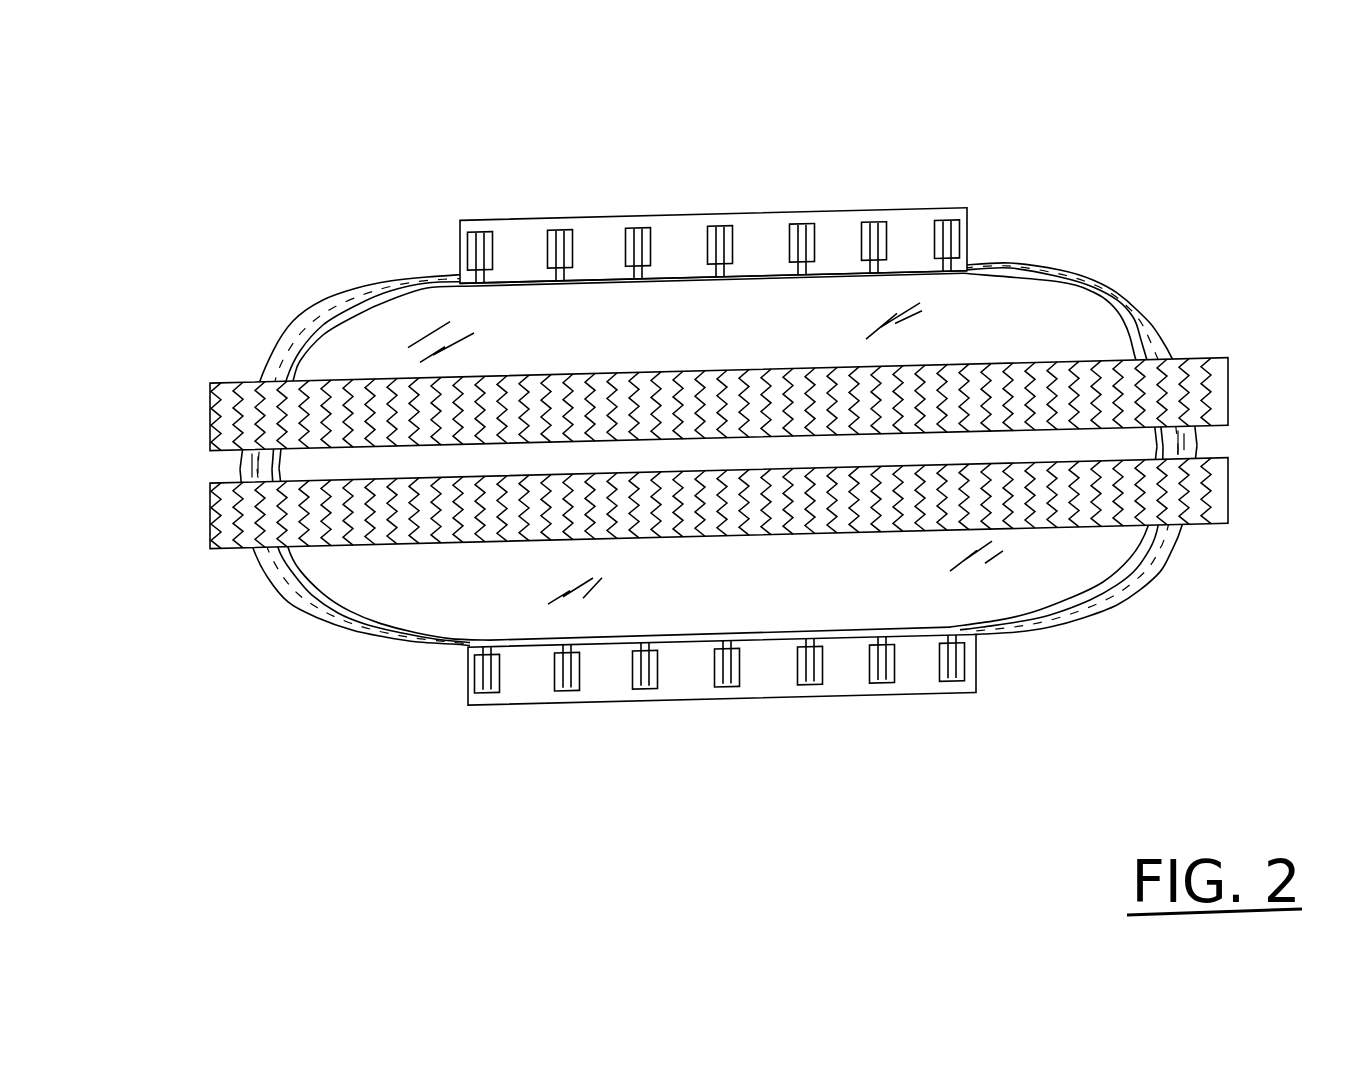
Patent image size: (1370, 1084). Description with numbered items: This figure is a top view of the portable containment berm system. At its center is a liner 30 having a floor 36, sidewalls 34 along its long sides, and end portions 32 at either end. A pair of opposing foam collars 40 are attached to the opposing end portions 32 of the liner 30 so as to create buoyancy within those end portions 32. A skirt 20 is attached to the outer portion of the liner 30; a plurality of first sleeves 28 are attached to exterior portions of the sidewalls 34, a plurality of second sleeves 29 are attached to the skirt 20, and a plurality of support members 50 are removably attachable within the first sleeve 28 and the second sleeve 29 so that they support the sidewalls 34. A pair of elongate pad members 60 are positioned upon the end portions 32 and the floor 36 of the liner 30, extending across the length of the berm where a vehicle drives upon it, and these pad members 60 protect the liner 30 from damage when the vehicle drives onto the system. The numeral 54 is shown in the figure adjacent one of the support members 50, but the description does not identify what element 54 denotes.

The skirt 20 is at (903, 232).
The first sleeve 28 is at (802, 640).
The second sleeve 29 is at (716, 678).
The liner 30 is at (362, 641).
The end portion 32 is at (288, 582).
The sidewall 34 is at (828, 275).
The floor 36 is at (1060, 323).
The foam collar 40 is at (343, 313).
The support member 50 is at (966, 662).
The clip leg 54 is at (884, 687).
The pad member 60 is at (1175, 380).